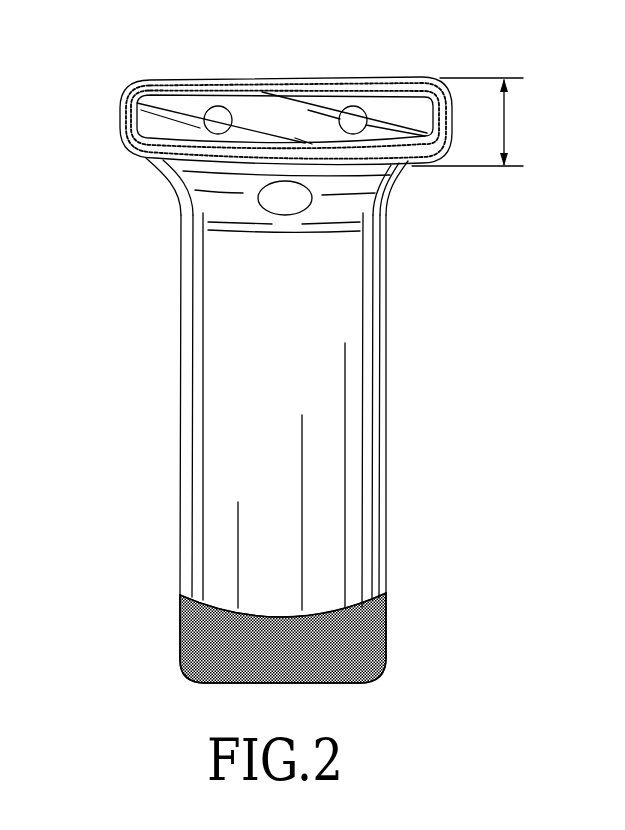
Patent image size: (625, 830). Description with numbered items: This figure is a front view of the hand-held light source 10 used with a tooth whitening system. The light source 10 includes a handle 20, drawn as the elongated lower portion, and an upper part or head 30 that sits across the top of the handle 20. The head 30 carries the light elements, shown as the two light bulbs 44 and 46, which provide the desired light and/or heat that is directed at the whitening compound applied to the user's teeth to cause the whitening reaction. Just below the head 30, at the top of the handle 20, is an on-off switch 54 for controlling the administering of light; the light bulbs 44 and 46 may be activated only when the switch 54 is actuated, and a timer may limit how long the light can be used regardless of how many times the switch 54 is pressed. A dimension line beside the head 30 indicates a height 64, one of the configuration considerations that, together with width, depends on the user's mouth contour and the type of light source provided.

The hand-held light source 10 is at (276, 347).
The handle 20 is at (367, 470).
The head 30 is at (168, 172).
The light bulb 44 is at (218, 112).
The light bulb 46 is at (352, 118).
The on-off switch 54 is at (292, 196).
The height 64 is at (504, 122).